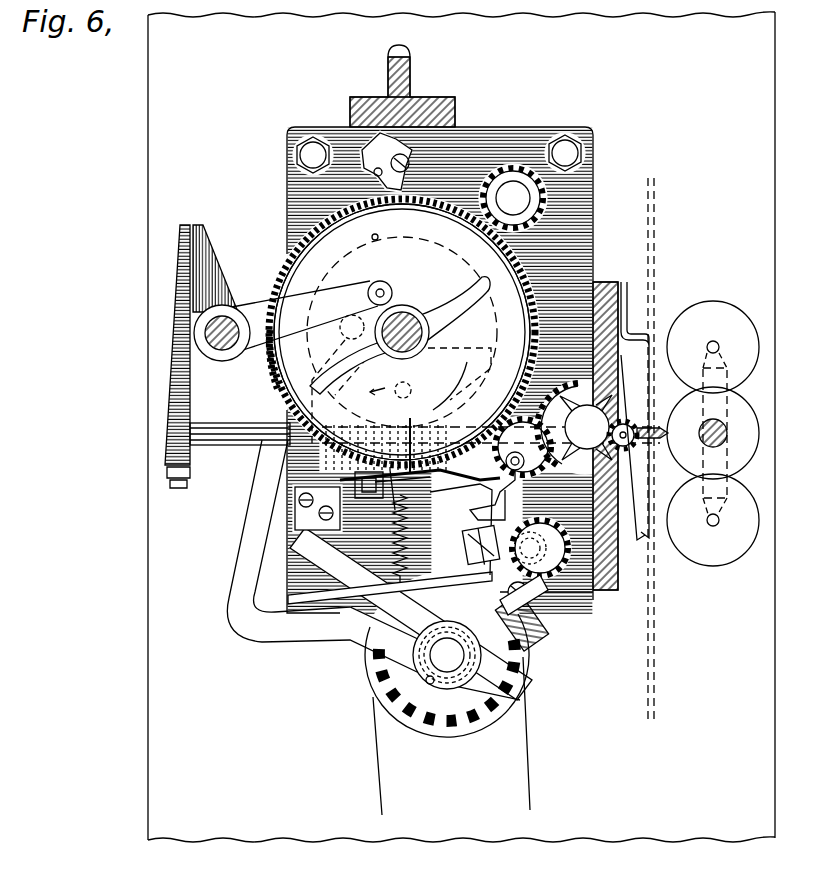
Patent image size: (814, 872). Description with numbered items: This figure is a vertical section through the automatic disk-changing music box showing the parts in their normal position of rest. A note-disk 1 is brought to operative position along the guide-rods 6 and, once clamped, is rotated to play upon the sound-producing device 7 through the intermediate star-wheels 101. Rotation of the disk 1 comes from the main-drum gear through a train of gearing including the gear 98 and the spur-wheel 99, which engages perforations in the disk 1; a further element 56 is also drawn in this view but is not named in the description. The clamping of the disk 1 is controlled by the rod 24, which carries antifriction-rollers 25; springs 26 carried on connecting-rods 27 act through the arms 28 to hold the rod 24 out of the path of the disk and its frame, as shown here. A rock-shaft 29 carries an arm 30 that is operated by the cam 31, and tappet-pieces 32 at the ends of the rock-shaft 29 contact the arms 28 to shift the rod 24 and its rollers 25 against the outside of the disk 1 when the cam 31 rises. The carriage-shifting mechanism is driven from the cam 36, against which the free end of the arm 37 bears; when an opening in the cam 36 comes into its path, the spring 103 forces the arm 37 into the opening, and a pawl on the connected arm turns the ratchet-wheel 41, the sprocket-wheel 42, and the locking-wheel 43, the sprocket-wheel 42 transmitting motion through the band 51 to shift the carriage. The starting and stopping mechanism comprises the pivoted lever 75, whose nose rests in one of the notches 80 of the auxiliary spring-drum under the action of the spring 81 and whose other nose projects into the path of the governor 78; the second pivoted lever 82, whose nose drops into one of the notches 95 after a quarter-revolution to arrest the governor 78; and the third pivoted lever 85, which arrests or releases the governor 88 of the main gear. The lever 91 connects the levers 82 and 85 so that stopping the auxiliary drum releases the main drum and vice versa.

The note-disk 1 is at (655, 692).
The guide-rods 6 is at (265, 380).
The sound-producing device 7 is at (640, 489).
The rod 24 is at (728, 435).
The antifriction-rollers 25 is at (742, 462).
The springs 26 is at (332, 426).
The connecting-rods 27 is at (243, 446).
The arms 28 is at (192, 397).
The rock-shaft 29 is at (220, 350).
The arm 30 is at (312, 315).
The cam 31 is at (432, 304).
The tappet-pieces 32 is at (212, 266).
The cam 36 is at (488, 372).
The arm 37 is at (252, 548).
The ratchet-wheel 41 is at (440, 726).
The sprocket-wheel 42 is at (470, 736).
The locking-wheel 43 is at (458, 655).
The band 51 is at (530, 766).
The pinion 56 is at (585, 205).
The pivoted lever 75 is at (438, 562).
The governor 78 is at (463, 556).
The notches 80 is at (402, 332).
The spring 81 is at (393, 535).
The second pivoted lever 82 is at (530, 480).
The third pivoted lever 85 is at (512, 505).
The governor 88 is at (548, 630).
The lever 91 is at (497, 483).
The notches 95 is at (302, 248).
The gear 98 is at (553, 425).
The spur-wheel 99 is at (620, 412).
The star-wheels 101 is at (648, 420).
The spring 103 is at (428, 685).